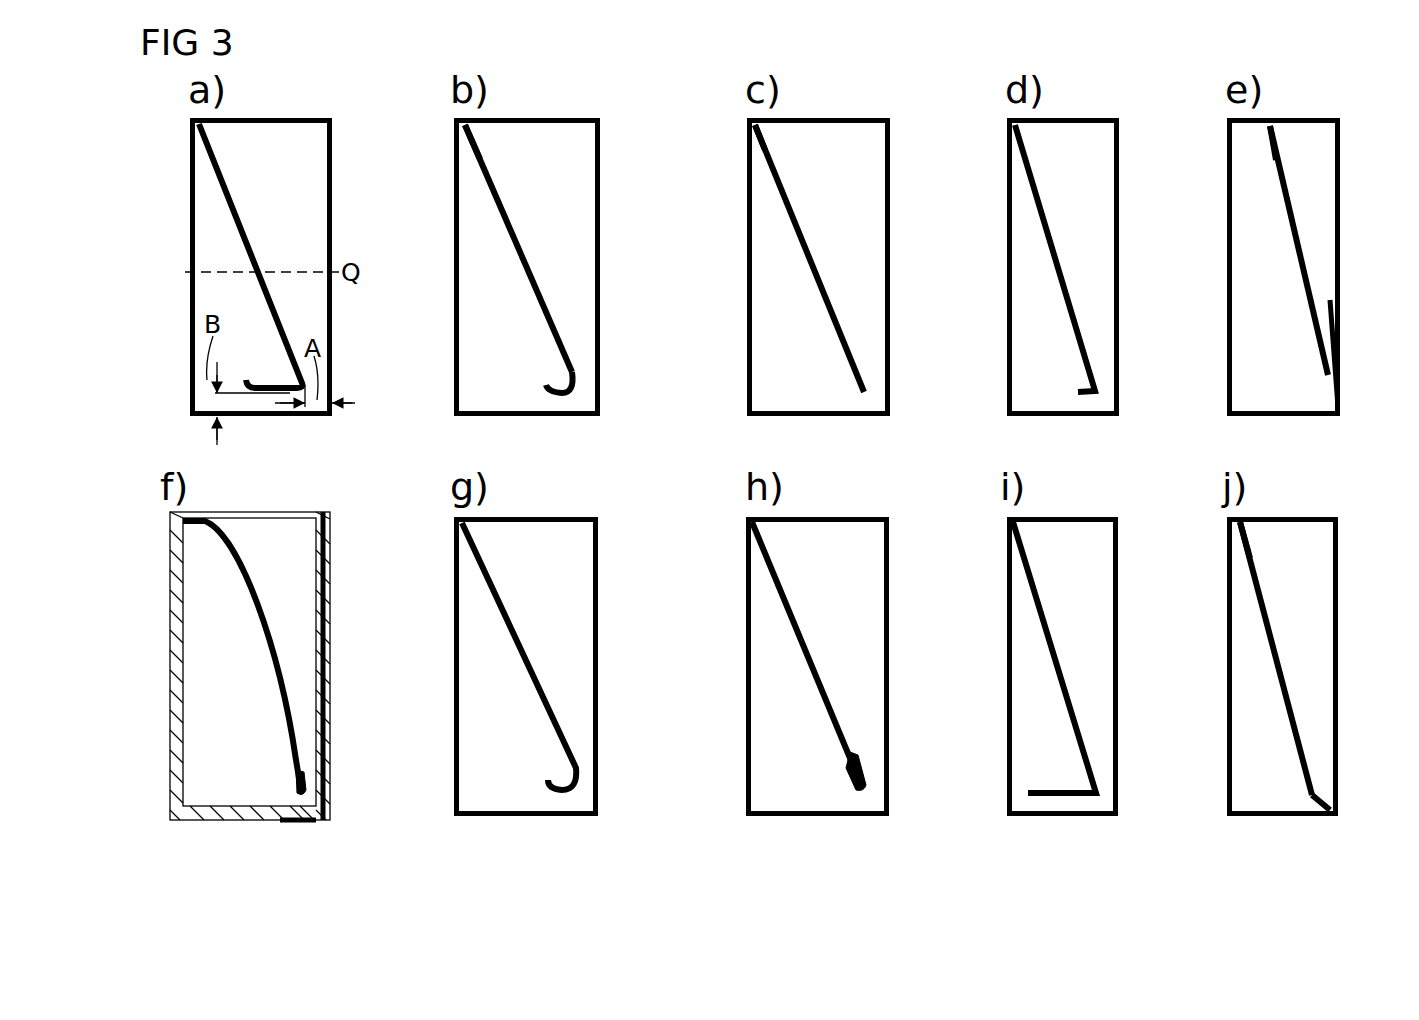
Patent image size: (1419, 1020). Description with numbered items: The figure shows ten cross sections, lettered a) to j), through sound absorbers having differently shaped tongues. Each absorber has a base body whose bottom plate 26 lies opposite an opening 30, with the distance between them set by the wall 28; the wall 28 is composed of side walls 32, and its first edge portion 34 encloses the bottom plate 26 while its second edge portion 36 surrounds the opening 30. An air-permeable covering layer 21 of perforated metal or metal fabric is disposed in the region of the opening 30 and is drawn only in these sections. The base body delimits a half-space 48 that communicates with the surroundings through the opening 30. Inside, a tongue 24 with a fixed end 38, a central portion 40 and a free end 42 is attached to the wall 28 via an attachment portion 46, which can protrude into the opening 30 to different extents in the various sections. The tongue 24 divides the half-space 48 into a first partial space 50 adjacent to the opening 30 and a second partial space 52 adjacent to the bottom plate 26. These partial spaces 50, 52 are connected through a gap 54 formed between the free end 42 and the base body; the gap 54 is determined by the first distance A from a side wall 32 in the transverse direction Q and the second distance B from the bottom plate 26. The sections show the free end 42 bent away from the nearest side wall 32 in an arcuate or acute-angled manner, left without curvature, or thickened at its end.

The covering layer 21 is at (250, 116).
The tongue 24 is at (266, 620).
The bottom plate 26 is at (522, 818).
The wall 28 is at (602, 738).
The opening 30 is at (303, 116).
The side wall 32 is at (331, 556).
The first edge portion 34 is at (1346, 121).
The second edge portion 36 is at (1348, 414).
The fixed end 38 is at (483, 130).
The central portion 40 is at (524, 212).
The free end 42 is at (580, 397).
The attachment portion 46 is at (765, 130).
The half-space 48 is at (830, 144).
The first partial space 50 is at (1323, 656).
The second partial space 52 is at (1288, 778).
The gap 54 is at (1308, 875).